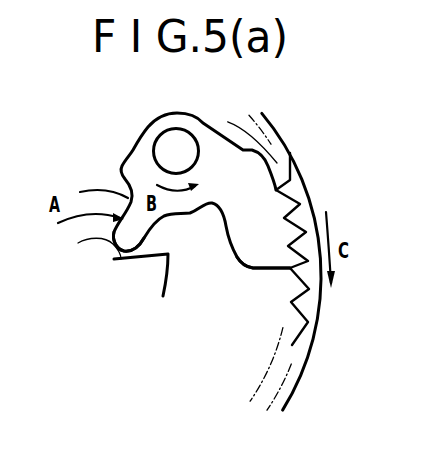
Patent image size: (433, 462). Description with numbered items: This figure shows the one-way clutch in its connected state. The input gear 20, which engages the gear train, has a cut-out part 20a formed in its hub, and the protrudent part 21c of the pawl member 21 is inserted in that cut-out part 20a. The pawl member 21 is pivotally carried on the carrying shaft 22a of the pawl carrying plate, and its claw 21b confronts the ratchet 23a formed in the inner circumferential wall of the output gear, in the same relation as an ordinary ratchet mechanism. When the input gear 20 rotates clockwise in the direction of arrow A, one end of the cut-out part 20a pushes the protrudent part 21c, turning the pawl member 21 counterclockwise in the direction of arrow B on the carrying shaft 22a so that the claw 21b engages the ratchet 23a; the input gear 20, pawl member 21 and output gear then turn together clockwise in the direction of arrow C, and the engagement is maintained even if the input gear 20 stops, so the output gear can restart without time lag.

The input gear 20 is at (150, 263).
The cut-out part 20a is at (124, 256).
The pawl member 21 is at (135, 162).
The claw 21b is at (259, 257).
The protrudent part 21c is at (140, 237).
The carrying shaft 22a is at (180, 139).
The ratchet 23a is at (277, 162).